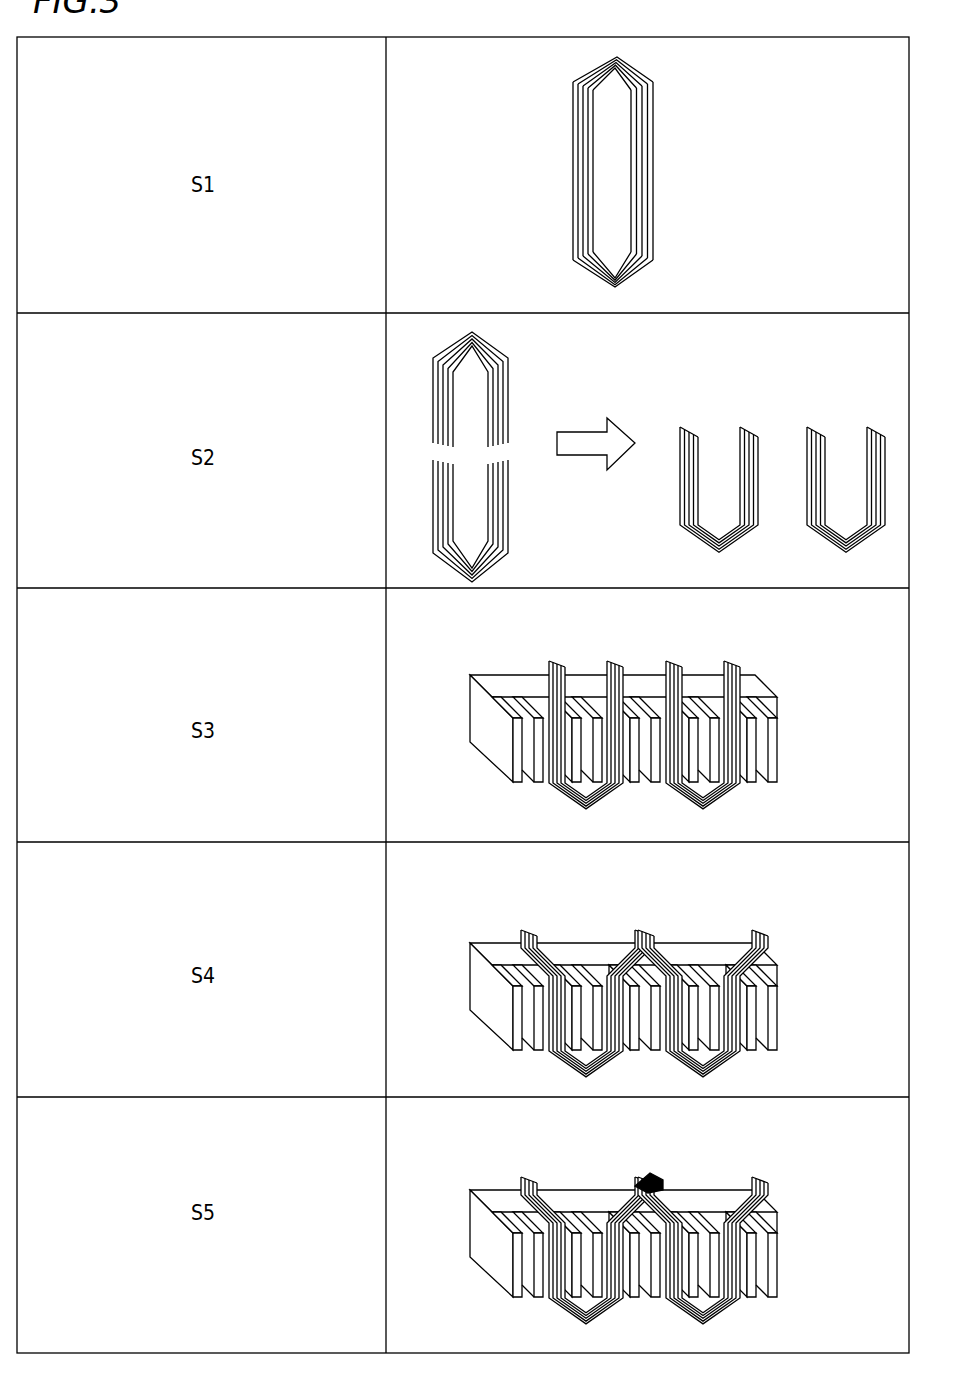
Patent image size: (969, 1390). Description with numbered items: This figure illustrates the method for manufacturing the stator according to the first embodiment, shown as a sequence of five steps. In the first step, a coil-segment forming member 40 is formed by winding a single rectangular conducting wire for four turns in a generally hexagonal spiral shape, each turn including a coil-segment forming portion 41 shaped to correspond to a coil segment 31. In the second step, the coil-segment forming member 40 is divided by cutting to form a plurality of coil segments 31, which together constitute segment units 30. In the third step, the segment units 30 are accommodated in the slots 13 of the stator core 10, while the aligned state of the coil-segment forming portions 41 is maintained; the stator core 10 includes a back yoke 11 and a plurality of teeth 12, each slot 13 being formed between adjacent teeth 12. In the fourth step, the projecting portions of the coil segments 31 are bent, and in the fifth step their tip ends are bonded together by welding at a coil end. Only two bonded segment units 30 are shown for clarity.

The stator core 10 is at (622, 975).
The back yoke 11 is at (508, 683).
The teeth 12 is at (503, 762).
The slot 13 is at (527, 760).
The segment unit 30 is at (659, 821).
The coil segment 31 is at (510, 393).
The coil-segment forming member 40 is at (613, 172).
The coil-segment forming portion 41 is at (592, 108).